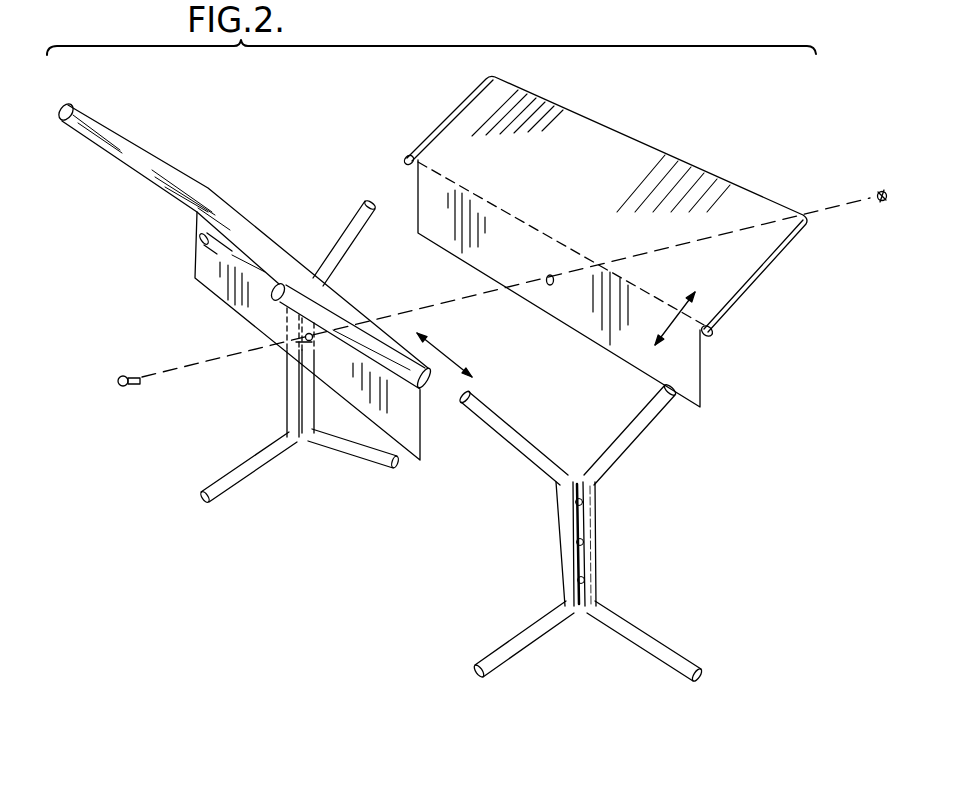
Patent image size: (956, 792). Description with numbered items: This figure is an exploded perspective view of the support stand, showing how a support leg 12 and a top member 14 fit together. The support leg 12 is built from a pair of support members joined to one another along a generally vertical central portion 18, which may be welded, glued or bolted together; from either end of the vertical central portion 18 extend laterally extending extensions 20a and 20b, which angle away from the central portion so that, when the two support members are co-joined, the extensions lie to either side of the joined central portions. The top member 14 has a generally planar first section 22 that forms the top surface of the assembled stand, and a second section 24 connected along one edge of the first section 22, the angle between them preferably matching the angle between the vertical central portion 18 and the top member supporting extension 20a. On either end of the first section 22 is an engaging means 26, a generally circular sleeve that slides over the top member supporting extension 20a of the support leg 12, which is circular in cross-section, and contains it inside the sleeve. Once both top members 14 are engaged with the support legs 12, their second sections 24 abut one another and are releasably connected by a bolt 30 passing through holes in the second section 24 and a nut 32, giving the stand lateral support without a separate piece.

The support leg 12 is at (599, 533).
The top member 14 is at (572, 237).
The vertical central portion 18 is at (600, 570).
The laterally extending top member supporting extension 20a is at (636, 424).
The laterally extending extension 20b is at (664, 655).
The first section 22 is at (582, 146).
The second section 24 is at (430, 201).
The engaging means 26 is at (724, 306).
The bolt 30 is at (122, 388).
The nut 32 is at (882, 192).